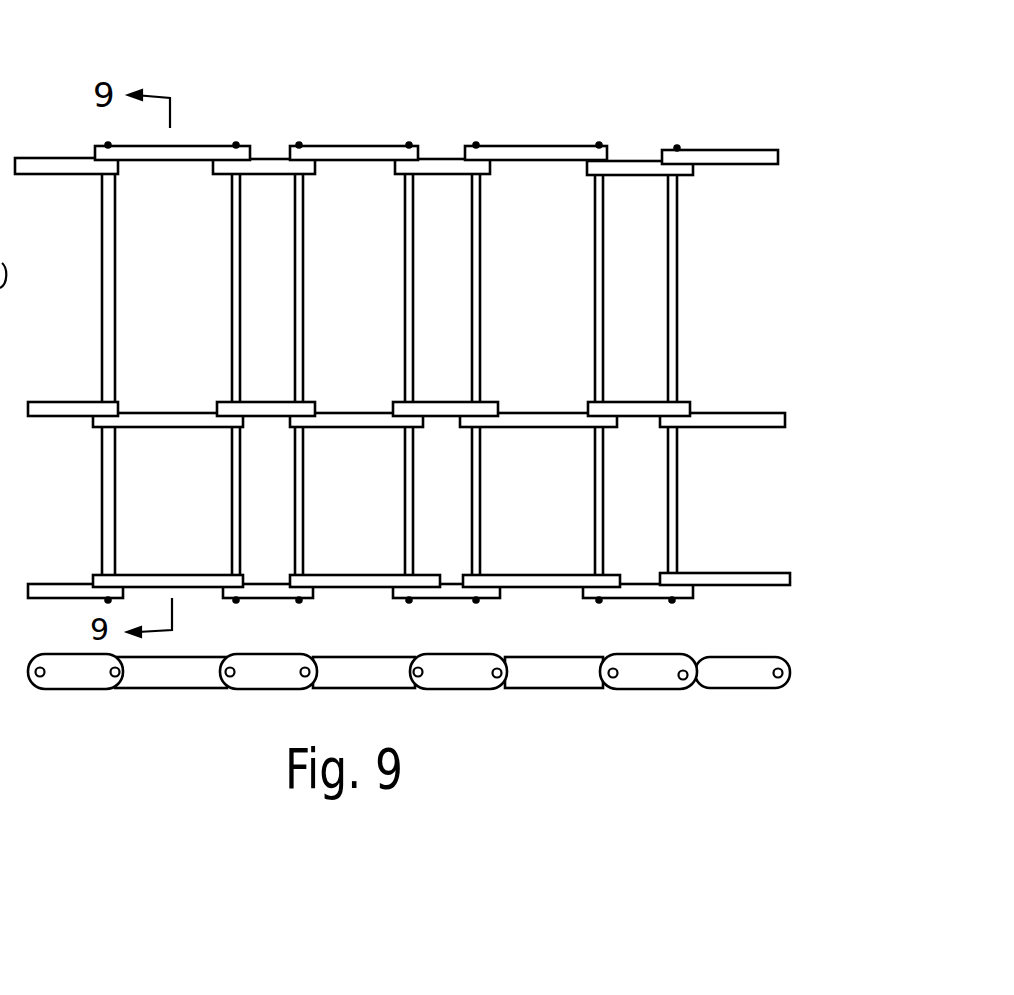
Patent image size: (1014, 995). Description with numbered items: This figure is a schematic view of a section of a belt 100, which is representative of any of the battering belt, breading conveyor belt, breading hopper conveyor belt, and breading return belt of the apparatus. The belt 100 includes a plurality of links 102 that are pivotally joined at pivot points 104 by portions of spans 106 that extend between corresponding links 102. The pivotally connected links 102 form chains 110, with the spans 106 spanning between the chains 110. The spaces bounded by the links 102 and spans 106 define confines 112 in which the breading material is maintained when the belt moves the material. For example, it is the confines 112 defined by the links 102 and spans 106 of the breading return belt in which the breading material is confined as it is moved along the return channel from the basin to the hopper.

The belt 100 is at (497, 425).
The links 102 is at (267, 162).
The pivot points 104 is at (597, 148).
The spans 106 is at (300, 343).
The chains 110 is at (497, 362).
The confines 112 is at (647, 498).